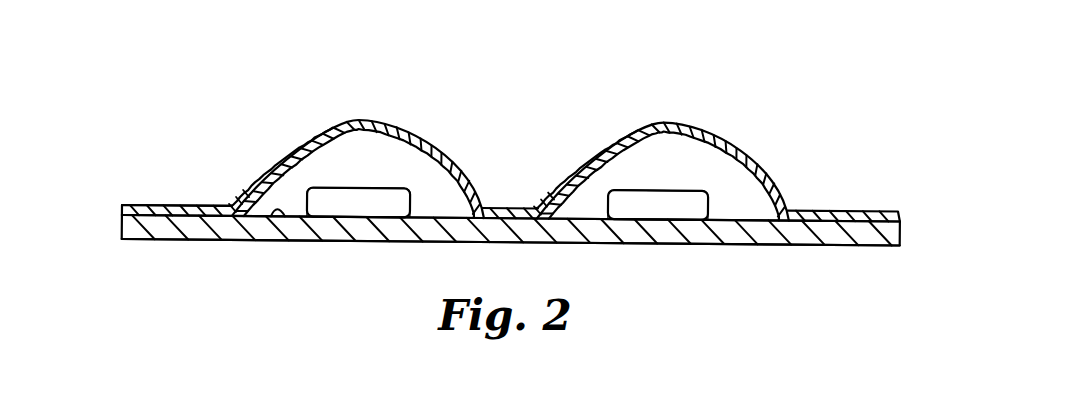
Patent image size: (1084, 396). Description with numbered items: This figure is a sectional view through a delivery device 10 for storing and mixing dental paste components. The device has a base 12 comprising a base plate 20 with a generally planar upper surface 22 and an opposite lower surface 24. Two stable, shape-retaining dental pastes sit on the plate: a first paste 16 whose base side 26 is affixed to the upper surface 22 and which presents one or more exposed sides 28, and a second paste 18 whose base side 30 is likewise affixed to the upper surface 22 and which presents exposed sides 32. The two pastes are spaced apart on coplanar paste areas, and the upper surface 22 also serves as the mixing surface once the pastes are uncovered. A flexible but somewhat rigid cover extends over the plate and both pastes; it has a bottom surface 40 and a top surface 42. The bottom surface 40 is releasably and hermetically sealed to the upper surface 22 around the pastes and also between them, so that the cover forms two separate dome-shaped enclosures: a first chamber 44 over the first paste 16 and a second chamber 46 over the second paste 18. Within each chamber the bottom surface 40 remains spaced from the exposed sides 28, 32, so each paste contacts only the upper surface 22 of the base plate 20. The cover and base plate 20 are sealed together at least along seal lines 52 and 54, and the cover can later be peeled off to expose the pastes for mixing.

The delivery device 10 is at (768, 86).
The base 12 is at (185, 244).
The first paste 16 is at (399, 187).
The second paste 18 is at (694, 186).
The base plate 20 is at (124, 221).
The upper surface 22 is at (280, 214).
The lower surface 24 is at (243, 240).
The base side 26 is at (367, 228).
The exposed sides 28 is at (347, 186).
The base side 30 is at (652, 222).
The exposed sides 32 is at (647, 187).
The bottom surface 40 is at (162, 218).
The top surface 42 is at (188, 205).
The first chamber 44 is at (347, 162).
The second chamber 46 is at (649, 167).
The seal line 52 is at (236, 206).
The seal line 54 is at (533, 207).